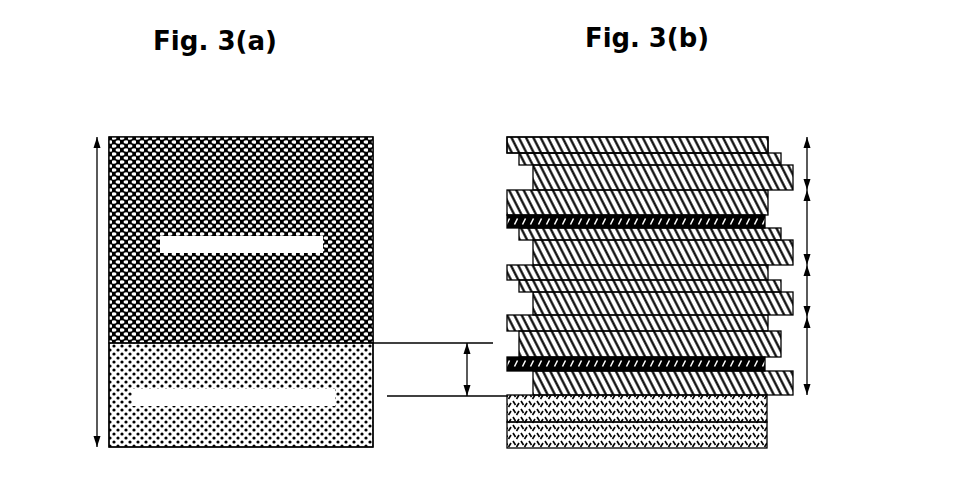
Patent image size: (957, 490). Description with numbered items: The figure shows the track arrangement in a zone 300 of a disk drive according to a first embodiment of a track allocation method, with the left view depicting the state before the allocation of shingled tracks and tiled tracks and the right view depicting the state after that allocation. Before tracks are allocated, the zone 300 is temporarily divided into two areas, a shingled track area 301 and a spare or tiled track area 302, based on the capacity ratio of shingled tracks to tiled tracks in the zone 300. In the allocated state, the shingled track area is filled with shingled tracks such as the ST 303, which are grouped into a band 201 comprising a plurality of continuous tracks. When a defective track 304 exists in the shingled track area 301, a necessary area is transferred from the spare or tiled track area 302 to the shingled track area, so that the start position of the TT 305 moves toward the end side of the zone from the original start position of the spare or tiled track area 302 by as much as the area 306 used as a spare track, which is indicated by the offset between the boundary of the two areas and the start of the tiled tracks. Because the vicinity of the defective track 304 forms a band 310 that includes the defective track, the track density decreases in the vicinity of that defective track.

In FIG. 3A, the zone 300 is at (84, 274).
In FIG. 3A, the shingled track area 301 is at (109, 199).
In FIG. 3B, the shingled track area 301 is at (679, 355).
In FIG. 3A, the spare or tiled track area 302 is at (109, 398).
In FIG. 3B, the shingled track 303 is at (507, 150).
In FIG. 3B, the defective track 304 is at (507, 224).
In FIG. 3B, the tiled track 305 is at (767, 421).
In FIG. 3B, the area used as a spare track 306 is at (440, 369).
In FIG. 3B, the band 201 is at (679, 227).
In FIG. 3B, the band with the defective track therebetween 310 is at (679, 227).